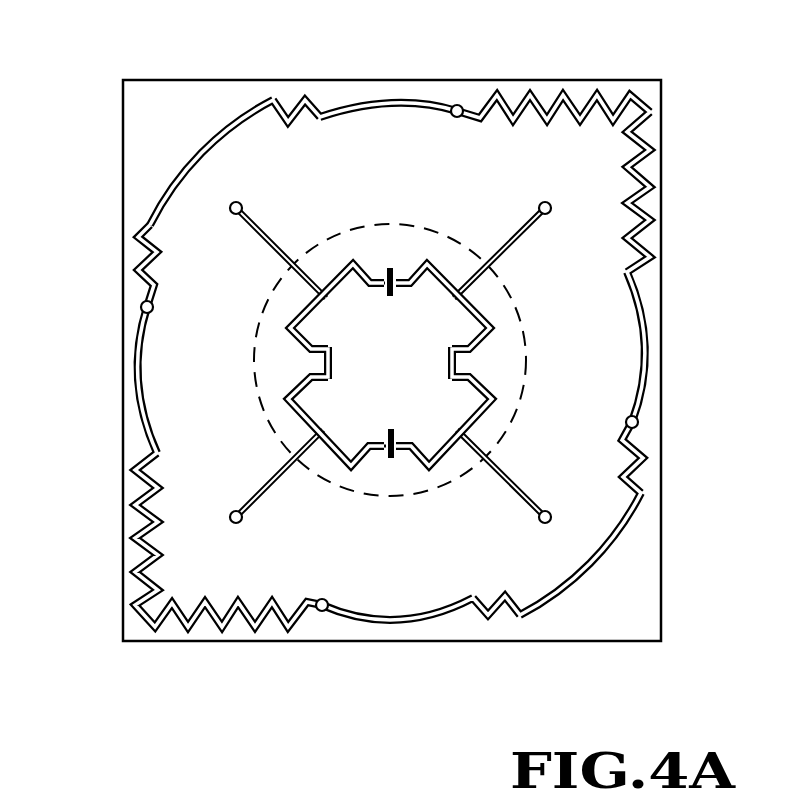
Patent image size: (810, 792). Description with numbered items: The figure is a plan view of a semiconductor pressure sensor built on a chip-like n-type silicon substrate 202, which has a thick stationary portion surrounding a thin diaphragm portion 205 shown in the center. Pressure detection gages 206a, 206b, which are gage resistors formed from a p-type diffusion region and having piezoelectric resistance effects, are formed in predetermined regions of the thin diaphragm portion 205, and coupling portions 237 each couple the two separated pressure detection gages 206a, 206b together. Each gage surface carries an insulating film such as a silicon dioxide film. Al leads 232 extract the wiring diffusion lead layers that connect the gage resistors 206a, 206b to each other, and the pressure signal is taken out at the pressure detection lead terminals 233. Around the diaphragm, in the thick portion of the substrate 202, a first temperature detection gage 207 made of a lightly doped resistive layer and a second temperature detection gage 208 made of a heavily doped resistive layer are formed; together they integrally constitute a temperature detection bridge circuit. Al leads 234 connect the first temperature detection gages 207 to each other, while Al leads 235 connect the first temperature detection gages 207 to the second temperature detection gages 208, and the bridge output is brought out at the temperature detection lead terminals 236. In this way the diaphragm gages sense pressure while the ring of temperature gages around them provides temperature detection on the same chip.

The n-type silicon substrate 202 is at (530, 92).
The thin diaphragm portion 205 is at (410, 120).
The pressure detection gage 206a is at (383, 278).
The pressure detection gage 206b is at (403, 279).
The first temperature detection gage 207 is at (290, 107).
The second temperature detection gage 208 is at (592, 97).
The Al leads 232 is at (502, 251).
The pressure detection lead terminals 233 is at (549, 203).
The Al leads 234 is at (201, 157).
The Al leads 235 is at (357, 103).
The temperature detection lead terminals 236 is at (460, 105).
The coupling portions 237 is at (338, 360).